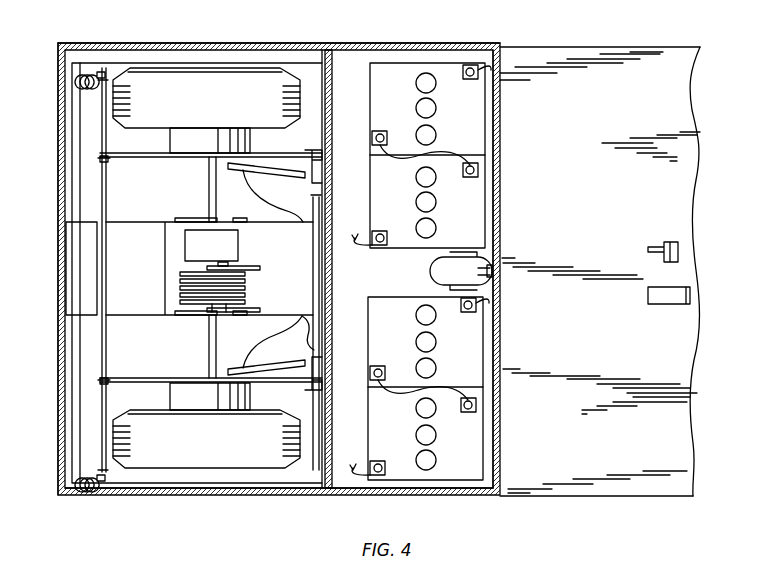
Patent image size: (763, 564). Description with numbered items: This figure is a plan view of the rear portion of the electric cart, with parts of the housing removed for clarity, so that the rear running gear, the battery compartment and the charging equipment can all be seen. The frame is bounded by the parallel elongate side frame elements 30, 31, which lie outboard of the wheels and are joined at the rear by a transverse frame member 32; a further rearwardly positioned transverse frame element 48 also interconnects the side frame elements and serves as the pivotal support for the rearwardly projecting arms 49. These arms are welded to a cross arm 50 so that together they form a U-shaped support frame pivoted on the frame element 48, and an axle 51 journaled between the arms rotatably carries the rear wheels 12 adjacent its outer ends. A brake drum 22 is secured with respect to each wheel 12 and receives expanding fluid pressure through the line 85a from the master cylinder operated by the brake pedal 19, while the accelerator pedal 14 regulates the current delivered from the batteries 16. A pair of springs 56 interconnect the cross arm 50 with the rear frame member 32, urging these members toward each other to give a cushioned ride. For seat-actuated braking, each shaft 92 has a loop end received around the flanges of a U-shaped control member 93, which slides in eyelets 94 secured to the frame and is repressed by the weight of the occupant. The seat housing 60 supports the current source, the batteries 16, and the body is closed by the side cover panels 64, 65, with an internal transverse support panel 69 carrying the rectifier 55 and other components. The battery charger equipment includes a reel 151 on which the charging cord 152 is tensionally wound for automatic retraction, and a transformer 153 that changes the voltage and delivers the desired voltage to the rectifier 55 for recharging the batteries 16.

The rear wheel 12 is at (232, 110).
The accelerator pedal 14 is at (662, 305).
The battery 16 is at (465, 115).
The brake pedal 19 is at (657, 243).
The brake drum 22 is at (168, 145).
The side frame element 30 is at (182, 497).
The side frame element 31 is at (228, 45).
The transverse frame member 32 is at (56, 372).
The transverse frame element 48 is at (326, 476).
The rearwardly projecting arm 49 is at (146, 163).
The cross arm 50 is at (110, 213).
The axle 51 is at (208, 181).
The rectifier 55 is at (188, 273).
The spring 56 is at (93, 82).
The seat housing 60 is at (503, 352).
The side cover panel 64 is at (257, 497).
The side cover panel 65 is at (323, 48).
The transverse support panel 69 is at (334, 284).
The fluid pressure line 85a is at (257, 196).
The shaft 92 is at (296, 179).
The U-shaped control member 93 is at (314, 262).
The eyelet 94 is at (313, 323).
The reel 151 is at (492, 270).
The charging cord 152 is at (500, 290).
The transformer 153 is at (184, 244).